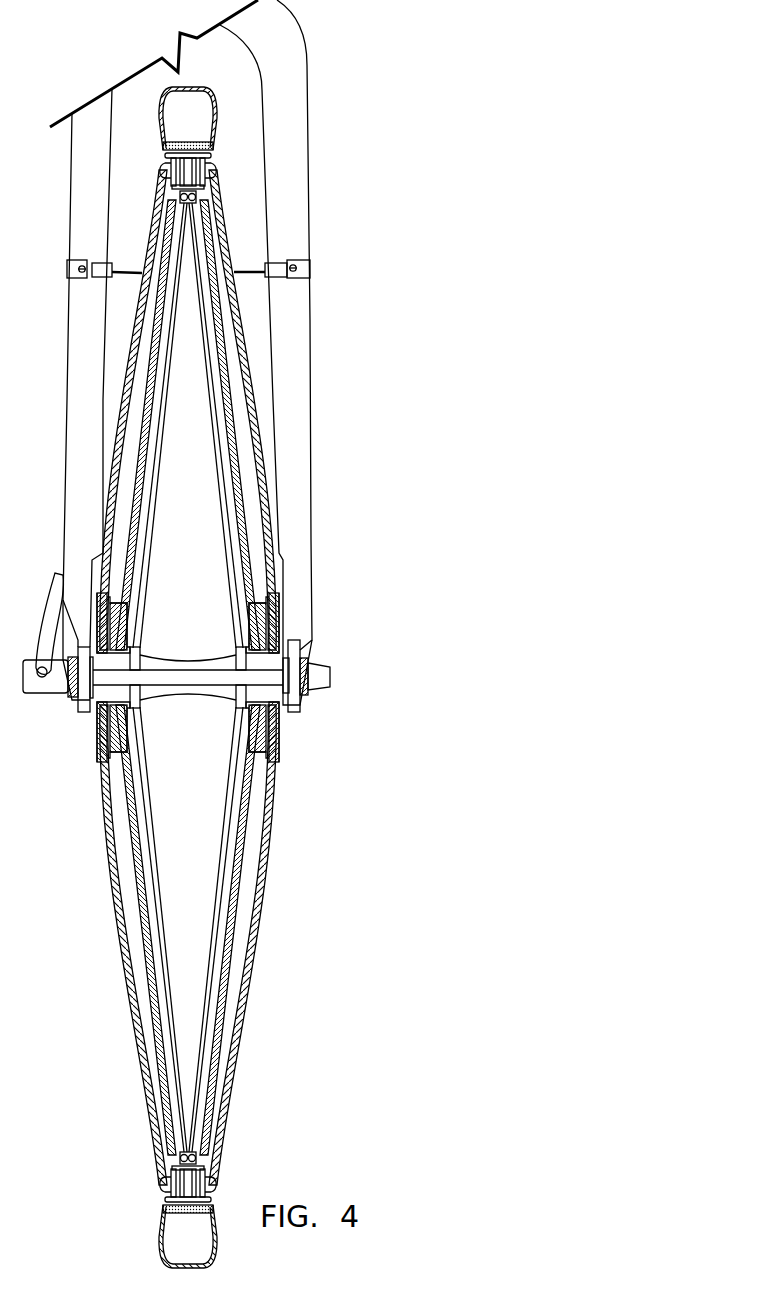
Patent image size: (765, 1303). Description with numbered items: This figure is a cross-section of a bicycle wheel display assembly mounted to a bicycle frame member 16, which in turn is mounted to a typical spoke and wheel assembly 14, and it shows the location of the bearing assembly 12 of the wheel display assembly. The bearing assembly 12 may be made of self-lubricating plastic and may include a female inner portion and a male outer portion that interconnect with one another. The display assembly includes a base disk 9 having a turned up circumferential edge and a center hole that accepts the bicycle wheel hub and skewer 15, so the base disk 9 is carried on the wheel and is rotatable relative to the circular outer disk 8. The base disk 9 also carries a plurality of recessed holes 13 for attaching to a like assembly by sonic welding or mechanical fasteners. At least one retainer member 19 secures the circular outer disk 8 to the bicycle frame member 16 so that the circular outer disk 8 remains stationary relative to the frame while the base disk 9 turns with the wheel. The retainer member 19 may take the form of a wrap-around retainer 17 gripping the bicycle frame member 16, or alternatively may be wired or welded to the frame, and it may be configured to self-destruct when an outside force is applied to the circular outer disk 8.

The circular outer disk 8 is at (262, 450).
The base disk 9 is at (242, 498).
The bearing assembly 12 is at (280, 624).
The recessed holes 13 is at (213, 187).
The spoke and wheel assembly 14 is at (213, 139).
The bicycle wheel hub and skewer 15 is at (330, 677).
The bicycle frame member 16 is at (312, 585).
The wrap-around retainer 17 is at (305, 266).
The retainer member 19 is at (258, 266).